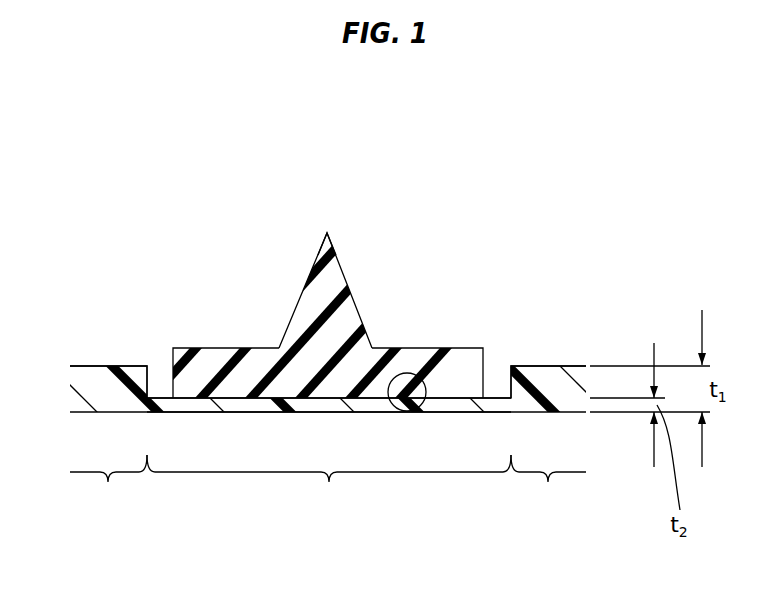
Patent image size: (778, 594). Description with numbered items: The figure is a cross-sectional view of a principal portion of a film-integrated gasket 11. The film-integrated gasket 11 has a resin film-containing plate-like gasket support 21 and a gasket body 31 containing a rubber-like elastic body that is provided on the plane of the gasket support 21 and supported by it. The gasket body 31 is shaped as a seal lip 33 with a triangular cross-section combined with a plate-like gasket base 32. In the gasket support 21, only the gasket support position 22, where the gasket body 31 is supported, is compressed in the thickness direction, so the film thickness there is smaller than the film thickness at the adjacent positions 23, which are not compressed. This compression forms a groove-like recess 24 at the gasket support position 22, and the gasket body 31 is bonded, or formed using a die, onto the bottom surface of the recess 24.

The film-integrated gasket 11 is at (122, 274).
The gasket support 21 is at (535, 376).
The gasket support position 22 is at (329, 459).
The adjacent positions 23 is at (328, 443).
The groove-like recess 24 is at (421, 407).
The gasket body 31 is at (360, 357).
The gasket base 32 is at (225, 357).
The seal lip 33 is at (322, 250).